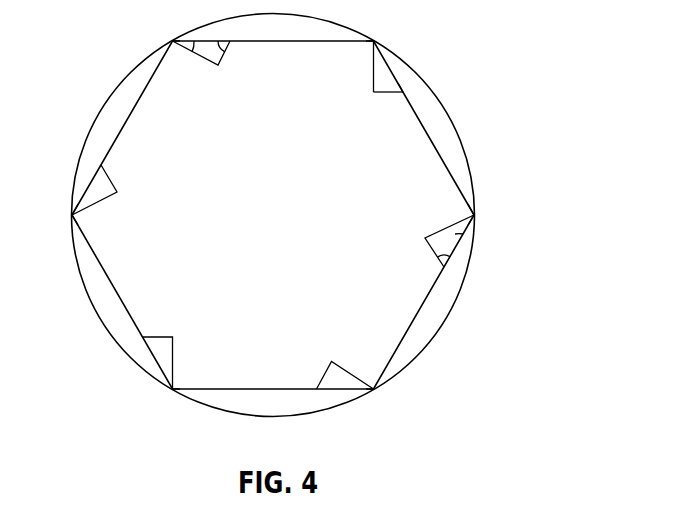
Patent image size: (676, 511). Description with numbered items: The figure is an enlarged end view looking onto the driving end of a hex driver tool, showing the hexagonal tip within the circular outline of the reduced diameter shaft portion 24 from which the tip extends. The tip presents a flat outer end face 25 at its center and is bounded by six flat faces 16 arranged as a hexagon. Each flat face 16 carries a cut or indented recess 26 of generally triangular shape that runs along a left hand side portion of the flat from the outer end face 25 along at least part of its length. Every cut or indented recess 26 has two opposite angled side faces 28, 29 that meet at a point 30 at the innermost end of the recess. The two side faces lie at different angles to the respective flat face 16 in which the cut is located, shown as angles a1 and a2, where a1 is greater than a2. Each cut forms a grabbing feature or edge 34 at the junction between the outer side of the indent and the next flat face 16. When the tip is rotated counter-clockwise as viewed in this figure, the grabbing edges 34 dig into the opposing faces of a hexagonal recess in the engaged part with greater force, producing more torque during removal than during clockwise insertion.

The flat face 16 is at (131, 113).
The reduced diameter shaft portion 24 is at (423, 80).
The flat outer end face 25 is at (288, 227).
The cut or indented recess 26 is at (297, 244).
The angled side face 28 is at (372, 62).
The angled side face 29 is at (398, 95).
The point 30 is at (371, 93).
The grabbing feature or edge 34 is at (474, 215).
The angle a1 is at (220, 65).
The angle a2 is at (190, 55).